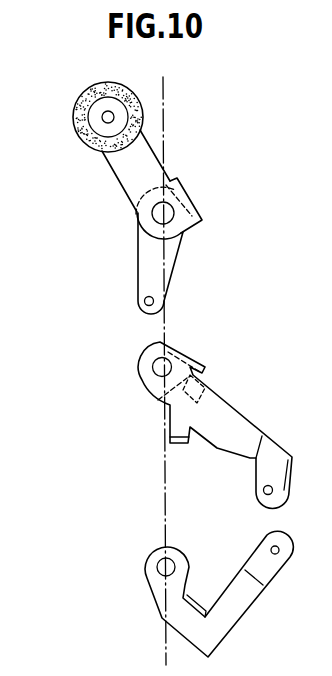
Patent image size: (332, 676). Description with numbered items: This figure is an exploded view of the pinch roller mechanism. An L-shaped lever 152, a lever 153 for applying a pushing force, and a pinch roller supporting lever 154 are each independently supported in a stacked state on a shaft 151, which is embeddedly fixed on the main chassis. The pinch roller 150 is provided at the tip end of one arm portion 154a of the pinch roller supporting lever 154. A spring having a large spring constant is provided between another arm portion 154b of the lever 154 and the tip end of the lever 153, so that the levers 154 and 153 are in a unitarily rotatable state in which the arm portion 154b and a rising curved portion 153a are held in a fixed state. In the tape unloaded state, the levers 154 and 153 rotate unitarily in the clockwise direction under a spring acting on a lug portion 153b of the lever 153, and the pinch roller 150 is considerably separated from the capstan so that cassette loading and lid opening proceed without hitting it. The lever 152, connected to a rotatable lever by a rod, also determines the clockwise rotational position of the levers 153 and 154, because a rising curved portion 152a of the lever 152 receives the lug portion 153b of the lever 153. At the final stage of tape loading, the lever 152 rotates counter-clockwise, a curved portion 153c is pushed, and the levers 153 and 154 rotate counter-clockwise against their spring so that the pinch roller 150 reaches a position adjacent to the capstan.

The pinch roller 150 is at (108, 82).
The shaft 151 is at (166, 97).
The L-shaped lever 152 is at (155, 603).
The rising curved portion 152a is at (195, 600).
The lever for applying a pushing force 153 is at (245, 418).
The rising curved portion 153a is at (170, 446).
The lug portion 153b is at (200, 364).
The curved portion 153c is at (205, 386).
The pinch roller supporting lever 154 is at (189, 198).
The arm portion 154a is at (115, 171).
The arm portion 154b is at (138, 255).